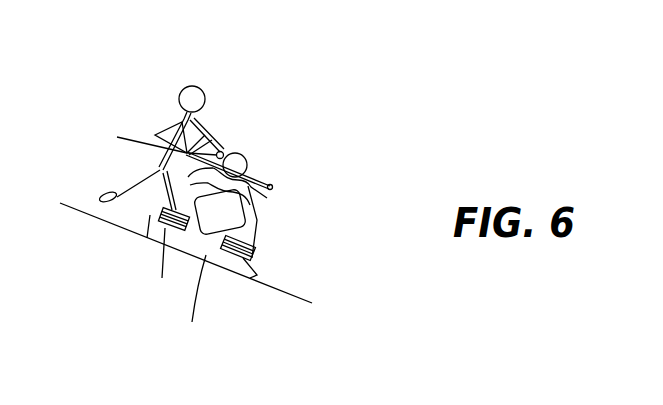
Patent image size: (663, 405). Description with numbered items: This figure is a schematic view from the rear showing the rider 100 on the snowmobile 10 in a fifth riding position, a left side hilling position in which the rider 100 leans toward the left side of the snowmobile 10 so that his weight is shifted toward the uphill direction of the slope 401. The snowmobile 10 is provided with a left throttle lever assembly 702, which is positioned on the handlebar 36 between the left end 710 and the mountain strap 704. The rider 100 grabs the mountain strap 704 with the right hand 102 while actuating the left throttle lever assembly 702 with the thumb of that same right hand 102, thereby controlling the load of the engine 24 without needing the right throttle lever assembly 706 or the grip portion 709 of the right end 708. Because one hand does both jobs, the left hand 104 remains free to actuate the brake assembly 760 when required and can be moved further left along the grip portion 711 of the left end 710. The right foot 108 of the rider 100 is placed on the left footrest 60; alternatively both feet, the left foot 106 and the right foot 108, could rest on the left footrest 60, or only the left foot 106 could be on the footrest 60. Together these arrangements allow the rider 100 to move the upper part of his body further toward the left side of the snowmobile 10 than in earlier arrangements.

The snowmobile 10 is at (192, 322).
The engine 24 is at (212, 222).
The handlebar 36 is at (271, 185).
The footrest 60 is at (168, 232).
The rider 100 is at (199, 80).
The right hand 102 is at (240, 190).
The left hand 104 is at (117, 137).
The left foot 106 is at (92, 208).
The right foot 108 is at (165, 210).
The slope 401 is at (311, 303).
The left throttle lever assembly 702 is at (233, 130).
The mountain strap 704 is at (248, 168).
The right throttle lever assembly 706 is at (271, 186).
The right end 708 is at (272, 191).
The grip portion 709 is at (273, 188).
The left end 710 is at (221, 152).
The grip portion 711 is at (212, 140).
The brake assembly 760 is at (205, 135).